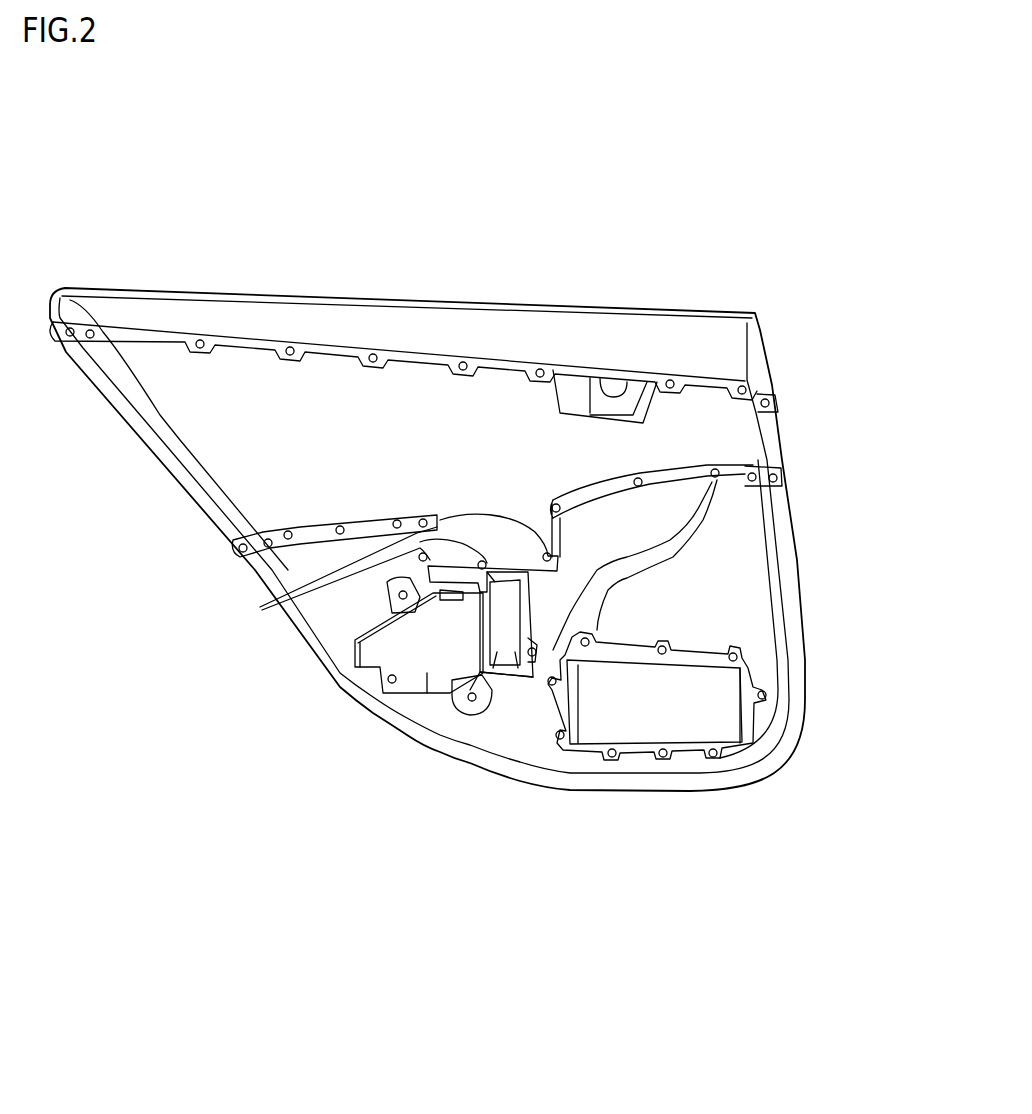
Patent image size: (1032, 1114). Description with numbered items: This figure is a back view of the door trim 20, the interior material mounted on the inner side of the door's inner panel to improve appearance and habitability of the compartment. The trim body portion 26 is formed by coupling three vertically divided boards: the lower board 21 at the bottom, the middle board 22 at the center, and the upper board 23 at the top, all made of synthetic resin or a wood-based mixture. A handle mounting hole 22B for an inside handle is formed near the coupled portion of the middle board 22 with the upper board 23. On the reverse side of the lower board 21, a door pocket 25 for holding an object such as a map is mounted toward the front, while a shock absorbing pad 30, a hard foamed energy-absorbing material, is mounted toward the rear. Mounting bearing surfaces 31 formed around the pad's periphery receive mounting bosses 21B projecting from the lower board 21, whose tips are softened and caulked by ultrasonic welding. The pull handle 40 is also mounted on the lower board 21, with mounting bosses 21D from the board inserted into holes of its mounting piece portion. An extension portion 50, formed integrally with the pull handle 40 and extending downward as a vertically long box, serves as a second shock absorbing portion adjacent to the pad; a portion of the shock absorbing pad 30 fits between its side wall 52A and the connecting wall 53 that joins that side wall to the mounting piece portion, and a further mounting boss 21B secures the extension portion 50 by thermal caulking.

The door trim 20 is at (674, 252).
The lower board 21 is at (748, 545).
The middle board 22 is at (738, 438).
The upper board 23 is at (727, 347).
The trim body portion 26 is at (489, 370).
The handle mounting hole 22B is at (601, 376).
The door pocket 25 is at (727, 722).
The pull handle 40 is at (541, 610).
The mounting boss 21D is at (275, 601).
The connecting wall 53 is at (417, 582).
The shock absorbing pad 30 is at (405, 695).
The mounting boss 21B is at (397, 588).
The mounting bearing surface 31 is at (390, 684).
The extension portion 50 is at (516, 678).
The side wall 52A is at (480, 616).